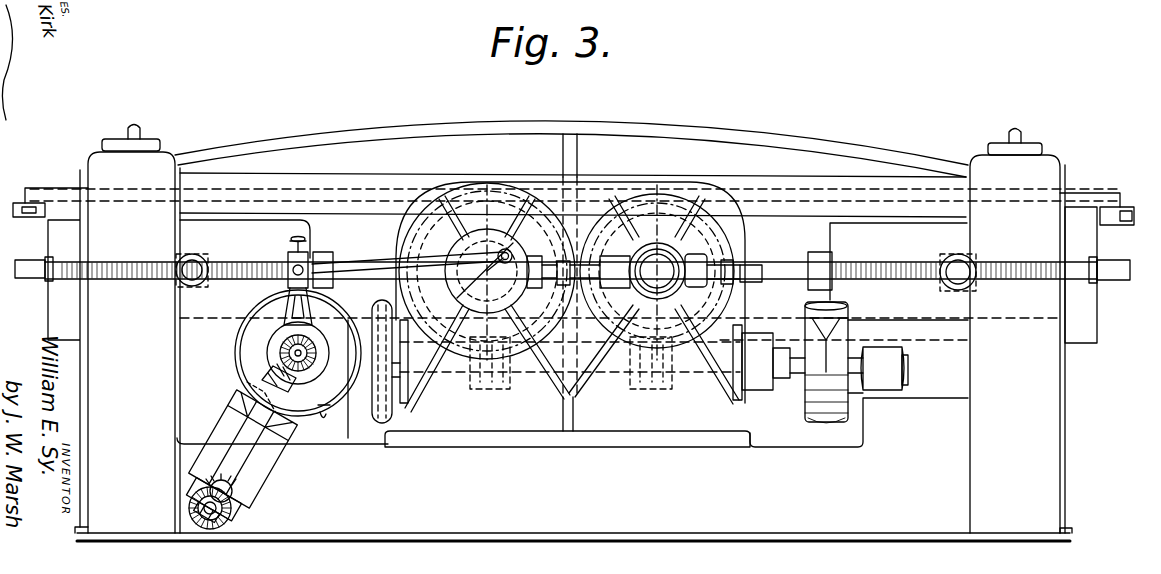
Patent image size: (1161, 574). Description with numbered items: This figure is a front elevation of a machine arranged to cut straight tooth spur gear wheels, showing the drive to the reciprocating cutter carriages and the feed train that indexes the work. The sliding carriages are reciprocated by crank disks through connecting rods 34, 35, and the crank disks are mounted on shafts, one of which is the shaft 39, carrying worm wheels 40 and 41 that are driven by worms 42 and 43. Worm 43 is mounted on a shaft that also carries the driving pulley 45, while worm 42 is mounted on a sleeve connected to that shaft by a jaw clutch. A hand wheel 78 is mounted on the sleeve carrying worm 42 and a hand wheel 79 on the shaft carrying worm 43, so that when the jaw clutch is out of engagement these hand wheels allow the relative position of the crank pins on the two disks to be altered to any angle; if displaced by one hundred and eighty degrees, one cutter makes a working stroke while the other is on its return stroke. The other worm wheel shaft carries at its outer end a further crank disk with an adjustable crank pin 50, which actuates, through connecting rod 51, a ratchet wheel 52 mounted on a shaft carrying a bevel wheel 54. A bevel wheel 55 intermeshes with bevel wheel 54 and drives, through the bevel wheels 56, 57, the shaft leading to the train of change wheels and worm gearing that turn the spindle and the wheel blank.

The connecting rod 34 is at (258, 258).
The connecting rod 35 is at (797, 262).
The shaft 39 is at (662, 268).
The worm wheel 40 is at (420, 232).
The worm wheel 41 is at (712, 268).
The worm 42 is at (492, 388).
The worm 43 is at (655, 388).
The driving pulley 45 is at (803, 416).
The adjustable crank pin 50 is at (509, 250).
The connecting rod 51 is at (338, 262).
The ratchet wheel 52 is at (262, 300).
The bevel wheel 54 is at (282, 353).
The bevel wheel 55 is at (270, 380).
The bevel wheel 56 is at (205, 489).
The bevel wheel 57 is at (189, 508).
The hand wheel 78 is at (382, 425).
The hand wheel 79 is at (323, 420).